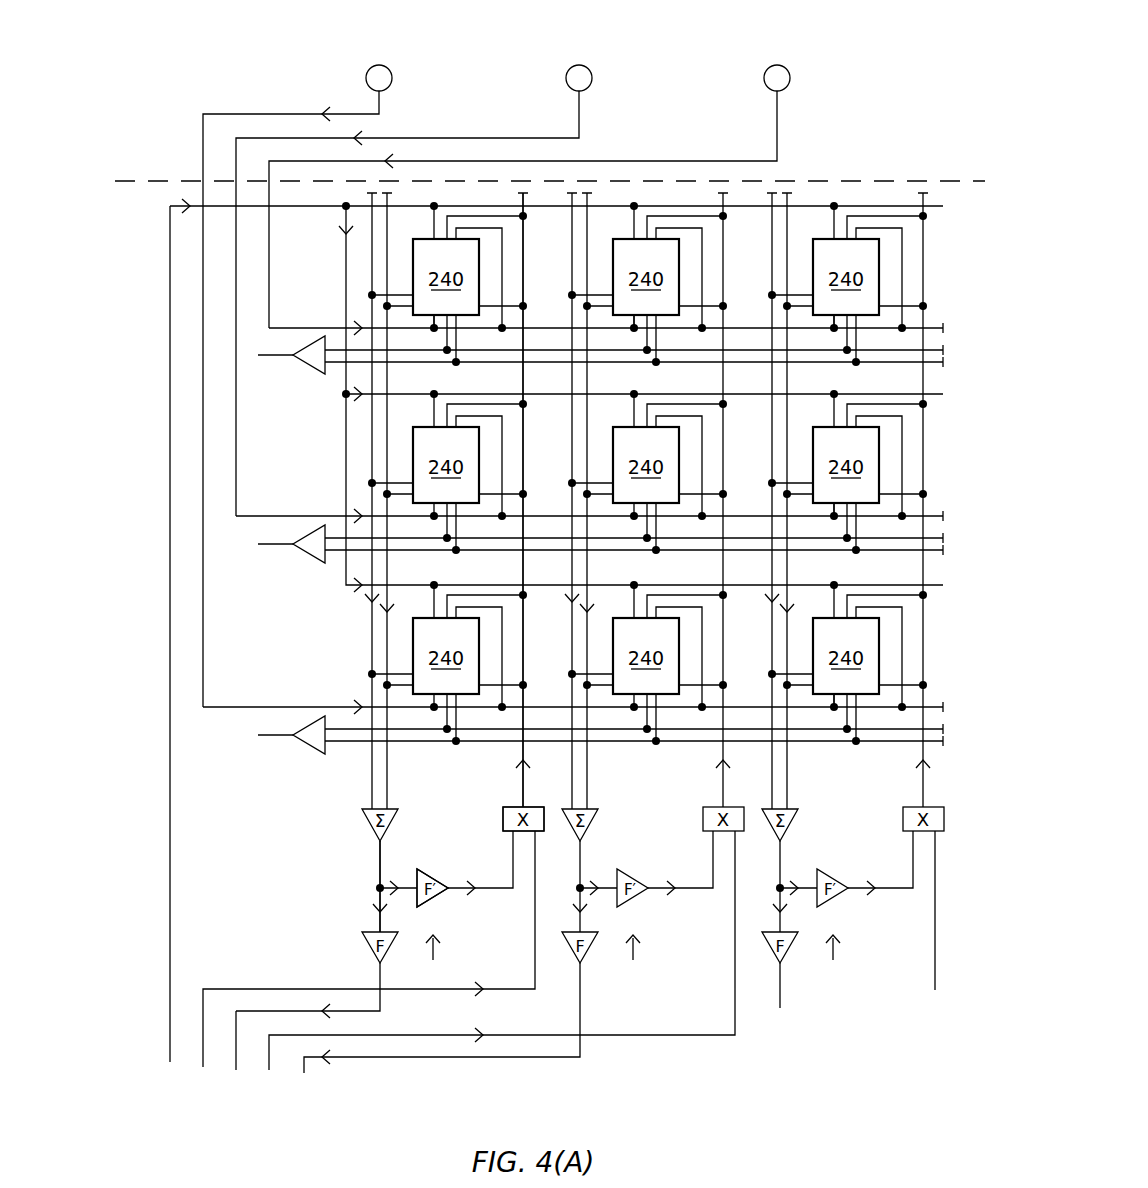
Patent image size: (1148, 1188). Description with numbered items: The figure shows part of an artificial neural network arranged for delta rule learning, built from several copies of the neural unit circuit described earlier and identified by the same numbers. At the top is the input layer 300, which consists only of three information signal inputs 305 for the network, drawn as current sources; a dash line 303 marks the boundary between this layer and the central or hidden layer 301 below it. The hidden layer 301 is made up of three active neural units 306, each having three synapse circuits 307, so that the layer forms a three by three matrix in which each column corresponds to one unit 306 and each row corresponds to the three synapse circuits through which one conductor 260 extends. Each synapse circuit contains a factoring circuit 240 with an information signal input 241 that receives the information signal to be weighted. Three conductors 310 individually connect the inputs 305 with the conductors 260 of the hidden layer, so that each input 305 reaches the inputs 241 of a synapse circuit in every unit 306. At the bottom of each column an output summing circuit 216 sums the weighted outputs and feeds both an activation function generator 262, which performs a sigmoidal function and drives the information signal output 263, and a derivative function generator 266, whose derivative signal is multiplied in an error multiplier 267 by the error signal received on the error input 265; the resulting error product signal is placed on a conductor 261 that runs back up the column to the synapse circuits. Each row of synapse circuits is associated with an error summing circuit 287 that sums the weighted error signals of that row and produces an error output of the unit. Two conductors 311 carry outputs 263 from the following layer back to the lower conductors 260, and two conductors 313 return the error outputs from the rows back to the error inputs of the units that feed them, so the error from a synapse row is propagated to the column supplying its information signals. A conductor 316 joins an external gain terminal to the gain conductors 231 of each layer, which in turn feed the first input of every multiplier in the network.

The input layer 300 is at (872, 82).
The central or hidden layer 301 is at (603, 471).
The dash lines 303 is at (900, 178).
The information signal inputs 305 is at (392, 76).
The active neural units 306 is at (510, 183).
The synapse circuits 307 is at (930, 648).
The conductors 310 is at (268, 242).
The conductors 311 is at (303, 1062).
The conductors 313 is at (203, 1050).
The conductor 316 is at (178, 862).
The gain conductor 231 is at (325, 208).
The factoring circuit 240 is at (647, 473).
The information signal input 241 is at (433, 318).
The information signal inputs 260 is at (310, 516).
The conductor 261 is at (720, 782).
The activation function generator 262 is at (370, 932).
The information signal output 263 is at (378, 973).
The input for error signal 265 is at (533, 907).
The derivative function generator 266 is at (427, 870).
The error multiplier 267 is at (503, 807).
The error summing circuit 287 is at (322, 718).
The output summing circuit 216 is at (370, 828).